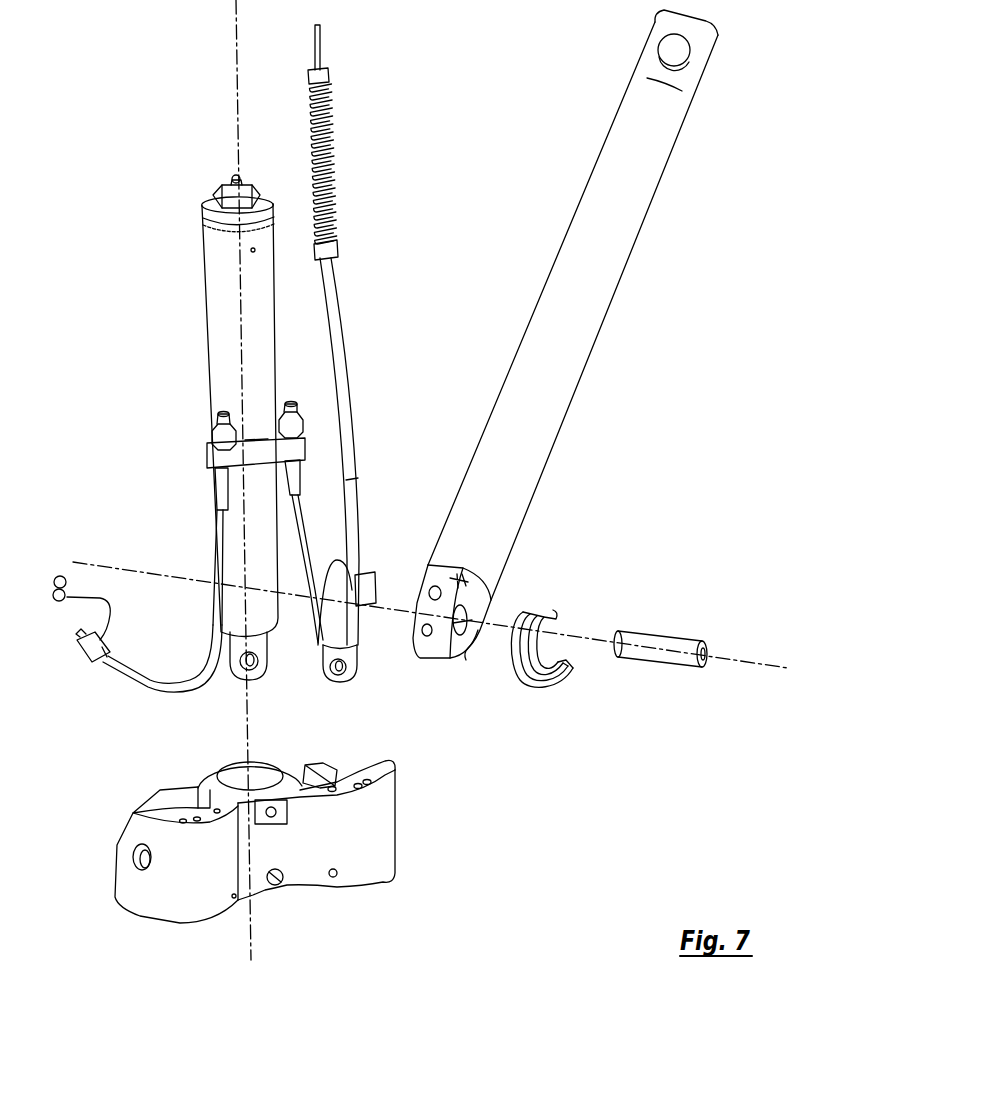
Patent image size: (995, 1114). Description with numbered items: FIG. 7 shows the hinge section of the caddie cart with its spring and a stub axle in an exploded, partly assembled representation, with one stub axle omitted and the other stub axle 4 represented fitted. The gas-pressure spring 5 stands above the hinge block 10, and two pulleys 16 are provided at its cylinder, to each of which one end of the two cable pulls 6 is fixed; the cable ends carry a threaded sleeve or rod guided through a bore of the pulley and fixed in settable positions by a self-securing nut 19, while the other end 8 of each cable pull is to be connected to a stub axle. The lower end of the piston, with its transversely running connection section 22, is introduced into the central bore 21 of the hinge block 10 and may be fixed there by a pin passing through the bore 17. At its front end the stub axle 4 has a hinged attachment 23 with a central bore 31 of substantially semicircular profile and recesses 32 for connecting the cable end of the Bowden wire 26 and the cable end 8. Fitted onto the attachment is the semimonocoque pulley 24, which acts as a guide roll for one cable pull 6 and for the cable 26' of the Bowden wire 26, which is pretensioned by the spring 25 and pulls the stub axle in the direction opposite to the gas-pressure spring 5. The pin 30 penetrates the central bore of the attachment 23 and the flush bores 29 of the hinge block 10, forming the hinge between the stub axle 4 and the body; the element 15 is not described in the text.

The stub axle 4 is at (575, 350).
The gas-pressure spring 5 is at (215, 322).
The cable pull 6 is at (215, 540).
The cable end 8 is at (106, 626).
The hinge block 10 is at (367, 830).
The valve pin 15 is at (232, 181).
The pulley 16 is at (222, 468).
The bore 17 is at (277, 884).
The self-securing nut 19 is at (218, 428).
The central bore 21 is at (262, 777).
The connection section 22 is at (231, 668).
The hinged attachment 23 is at (462, 652).
The semimonocoque pulley 24 is at (557, 612).
The spring 25 is at (328, 160).
The Bowden wire 26 is at (373, 451).
The cable 26' is at (378, 638).
The bore 29 is at (135, 866).
The pin 30 is at (663, 637).
The central bore 31 is at (468, 650).
The recess 32 is at (458, 580).